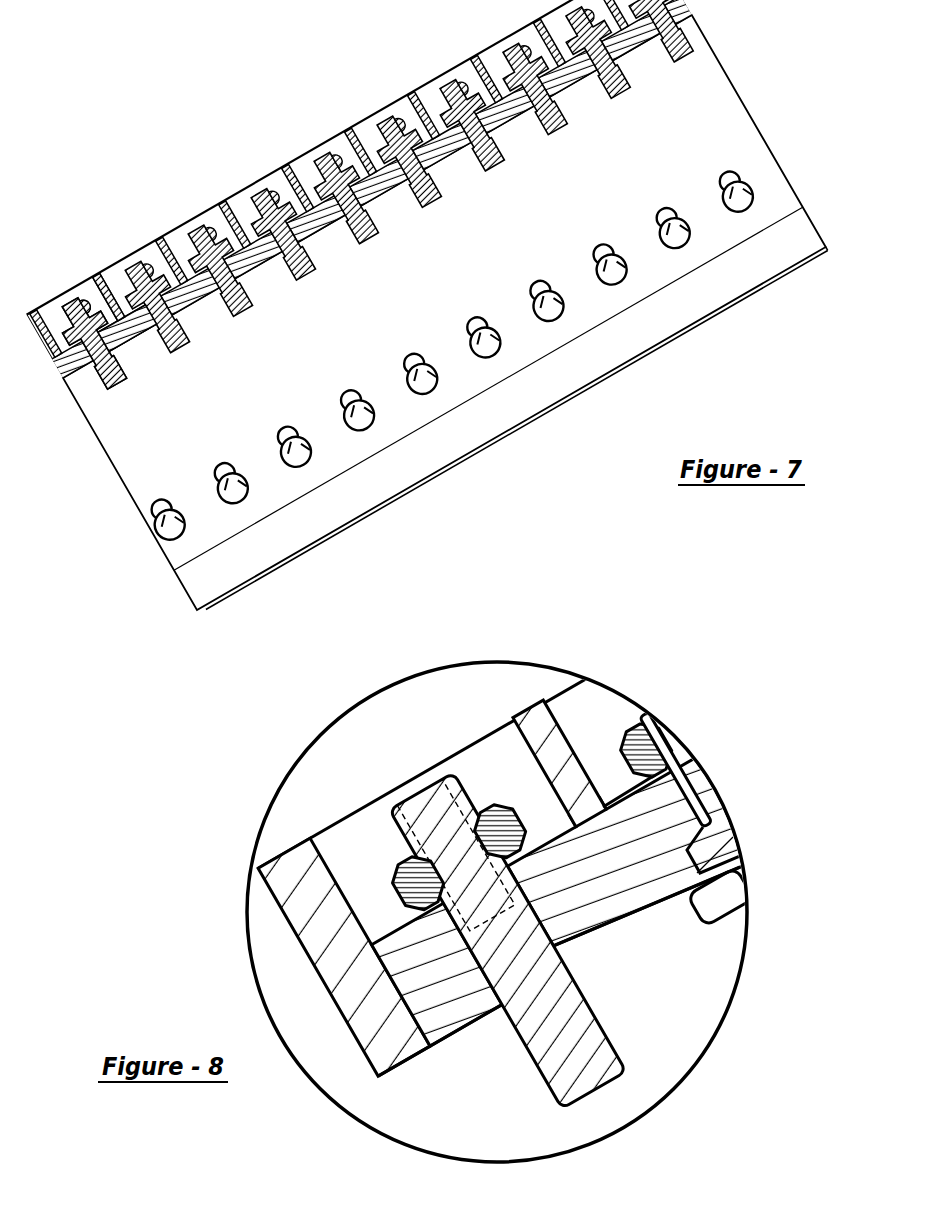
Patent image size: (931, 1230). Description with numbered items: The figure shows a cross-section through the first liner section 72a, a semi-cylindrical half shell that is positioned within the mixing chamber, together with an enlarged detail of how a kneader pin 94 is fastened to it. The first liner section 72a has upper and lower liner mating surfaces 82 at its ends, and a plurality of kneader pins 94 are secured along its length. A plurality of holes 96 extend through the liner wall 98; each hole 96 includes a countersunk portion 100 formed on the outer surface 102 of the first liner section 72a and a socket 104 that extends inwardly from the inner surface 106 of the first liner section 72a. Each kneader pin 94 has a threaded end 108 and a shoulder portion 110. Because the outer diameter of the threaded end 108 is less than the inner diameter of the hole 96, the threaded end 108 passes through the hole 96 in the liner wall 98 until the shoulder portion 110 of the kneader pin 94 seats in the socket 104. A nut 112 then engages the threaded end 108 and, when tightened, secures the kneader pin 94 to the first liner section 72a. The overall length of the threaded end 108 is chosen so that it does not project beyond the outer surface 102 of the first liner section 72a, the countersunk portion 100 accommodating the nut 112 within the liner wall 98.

In FIG. 8, the first liner section 72a is at (417, 1065).
In FIG. 7, the liner mating surfaces 82 is at (777, 243).
In FIG. 7, the kneader pin 94 is at (117, 387).
In FIG. 8, the kneader pin 94 is at (605, 1007).
In FIG. 8, the hole 96 is at (660, 850).
In FIG. 8, the liner wall 98 is at (337, 1003).
In FIG. 8, the countersunk portion 100 is at (505, 762).
In FIG. 8, the outer surface 102 is at (305, 838).
In FIG. 8, the socket 104 is at (493, 1010).
In FIG. 7, the inner surface 106 is at (150, 440).
In FIG. 8, the inner surface 106 is at (683, 905).
In FIG. 8, the threaded end 108 is at (458, 760).
In FIG. 7, the shoulder portion 110 is at (180, 520).
In FIG. 8, the shoulder portion 110 is at (573, 940).
In FIG. 8, the nut 112 is at (560, 838).